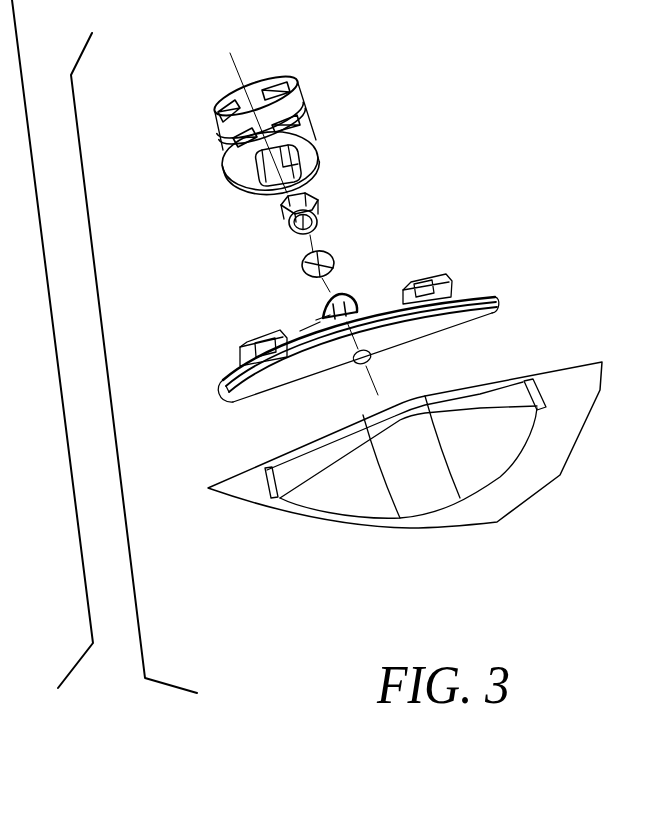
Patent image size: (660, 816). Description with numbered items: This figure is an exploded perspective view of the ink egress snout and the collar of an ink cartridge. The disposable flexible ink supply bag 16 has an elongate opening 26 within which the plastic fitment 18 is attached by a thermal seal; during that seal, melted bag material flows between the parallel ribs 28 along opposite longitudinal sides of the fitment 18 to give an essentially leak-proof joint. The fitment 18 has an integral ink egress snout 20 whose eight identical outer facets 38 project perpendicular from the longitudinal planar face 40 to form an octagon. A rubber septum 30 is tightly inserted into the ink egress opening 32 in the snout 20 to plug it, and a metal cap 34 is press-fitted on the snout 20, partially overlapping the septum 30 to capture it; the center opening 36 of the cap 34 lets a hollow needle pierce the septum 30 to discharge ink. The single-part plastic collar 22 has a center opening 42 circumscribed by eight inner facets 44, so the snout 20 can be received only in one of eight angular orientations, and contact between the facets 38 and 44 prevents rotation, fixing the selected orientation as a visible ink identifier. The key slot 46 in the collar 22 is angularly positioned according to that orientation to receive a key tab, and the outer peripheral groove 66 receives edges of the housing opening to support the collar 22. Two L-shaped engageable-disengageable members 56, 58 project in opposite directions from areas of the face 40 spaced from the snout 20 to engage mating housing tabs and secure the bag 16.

The ink supply bag 16 is at (519, 519).
The fitment 18 is at (213, 394).
The ink egress snout 20 is at (317, 312).
The collar 22 is at (234, 187).
The elongate opening 26 is at (345, 420).
The parallel ribs 28 is at (240, 380).
The rubber septum 30 is at (303, 262).
The ink egress opening 32 is at (378, 361).
The cap 34 is at (285, 222).
The center opening 36 is at (318, 221).
The outer peripheral facets 38 is at (366, 294).
The longitudinal planar face 40 is at (311, 332).
The center opening 42 is at (224, 152).
The inner peripheral facets 44 is at (327, 190).
The key slot 46 is at (312, 128).
The L-shaped engageable-disengageable member 56 is at (244, 342).
The L-shaped engageable-disengageable member 58 is at (445, 281).
The outer peripheral groove 66 is at (301, 110).